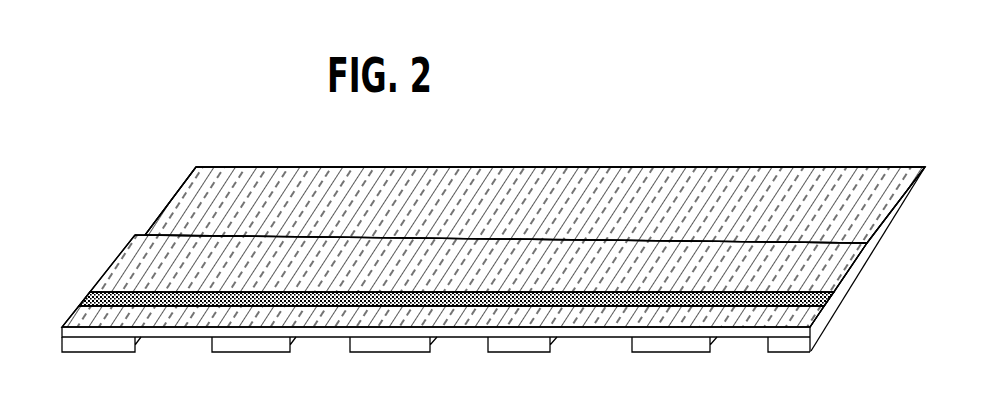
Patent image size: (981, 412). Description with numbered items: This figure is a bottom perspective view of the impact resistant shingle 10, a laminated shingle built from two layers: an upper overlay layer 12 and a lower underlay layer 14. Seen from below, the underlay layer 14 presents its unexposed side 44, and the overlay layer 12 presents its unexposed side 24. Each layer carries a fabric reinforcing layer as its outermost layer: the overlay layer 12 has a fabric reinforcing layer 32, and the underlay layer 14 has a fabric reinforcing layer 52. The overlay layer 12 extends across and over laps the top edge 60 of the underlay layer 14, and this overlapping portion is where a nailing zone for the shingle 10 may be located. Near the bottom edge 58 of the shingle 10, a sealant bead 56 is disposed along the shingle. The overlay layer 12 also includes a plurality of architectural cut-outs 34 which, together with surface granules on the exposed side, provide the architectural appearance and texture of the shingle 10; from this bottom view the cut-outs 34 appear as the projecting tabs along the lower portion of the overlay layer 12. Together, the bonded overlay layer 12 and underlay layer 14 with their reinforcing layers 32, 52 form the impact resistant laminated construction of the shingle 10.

The impact resistant shingle 10 is at (189, 112).
The overlay layer 12 is at (260, 343).
The underlay layer 14 is at (728, 242).
The unexposed side 24 is at (458, 190).
The fabric reinforcing layer 32 is at (290, 177).
The architectural cut-outs 34 is at (176, 354).
The unexposed side 44 is at (827, 273).
The fabric reinforcing layer 52 is at (172, 223).
The sealant bead 56 is at (90, 299).
The bottom edge 58 is at (463, 331).
The top edge 60 is at (527, 238).